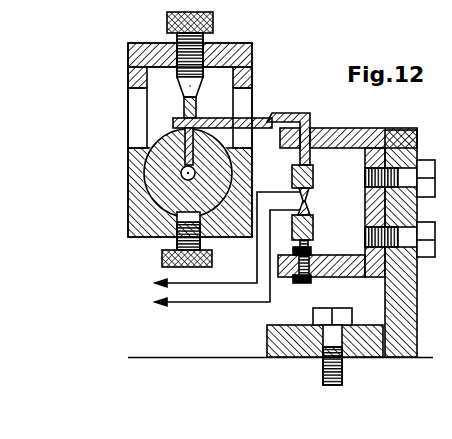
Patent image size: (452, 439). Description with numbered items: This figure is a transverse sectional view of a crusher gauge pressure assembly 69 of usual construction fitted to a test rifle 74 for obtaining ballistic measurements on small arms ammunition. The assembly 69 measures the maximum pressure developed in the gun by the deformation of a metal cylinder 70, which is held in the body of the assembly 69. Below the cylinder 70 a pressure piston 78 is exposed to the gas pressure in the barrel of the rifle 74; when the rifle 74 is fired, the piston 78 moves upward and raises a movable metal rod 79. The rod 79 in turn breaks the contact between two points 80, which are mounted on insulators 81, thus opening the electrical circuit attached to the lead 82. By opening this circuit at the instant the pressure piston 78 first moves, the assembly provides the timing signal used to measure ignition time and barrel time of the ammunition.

The crusher gauge pressure assembly 69 is at (251, 57).
The metal cylinder 70 is at (196, 110).
The rifle 74 is at (162, 192).
The pressure piston 78 is at (173, 122).
The movable metal rod 79 is at (308, 120).
The points 80 is at (306, 202).
The insulators 81 is at (333, 162).
The lead 82 is at (160, 284).